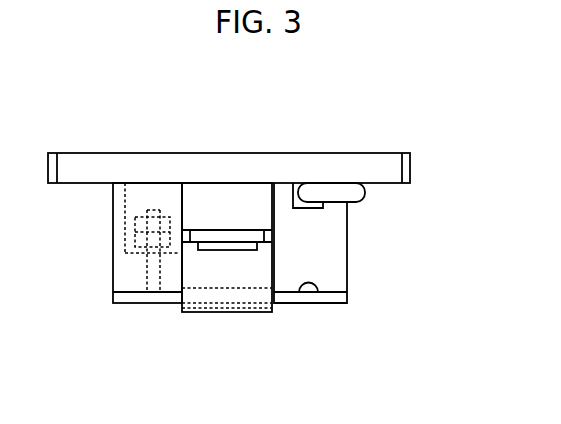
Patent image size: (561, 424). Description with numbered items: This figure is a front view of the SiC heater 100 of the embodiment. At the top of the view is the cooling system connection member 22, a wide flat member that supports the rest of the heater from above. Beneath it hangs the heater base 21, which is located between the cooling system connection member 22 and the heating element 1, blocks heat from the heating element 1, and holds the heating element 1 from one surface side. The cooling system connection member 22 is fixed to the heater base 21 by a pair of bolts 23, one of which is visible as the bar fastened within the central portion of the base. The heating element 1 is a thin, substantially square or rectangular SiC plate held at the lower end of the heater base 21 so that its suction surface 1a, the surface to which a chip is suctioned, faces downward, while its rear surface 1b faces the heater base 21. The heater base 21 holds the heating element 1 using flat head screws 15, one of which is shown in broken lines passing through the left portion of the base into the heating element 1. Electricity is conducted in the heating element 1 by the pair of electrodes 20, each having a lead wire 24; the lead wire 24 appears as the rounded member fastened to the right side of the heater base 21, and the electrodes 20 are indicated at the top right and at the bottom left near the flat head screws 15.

The SiC heater 100 is at (266, 120).
The cooling system connection member 22 is at (380, 157).
The lead wire 24 is at (365, 192).
The electrode 20 is at (336, 209).
The heater base 21 is at (340, 265).
The heating element 1 is at (347, 297).
The rear surface 1b is at (313, 289).
The suction surface 1a is at (302, 305).
The bolt 23 is at (237, 247).
The flat head screw 15 is at (152, 295).